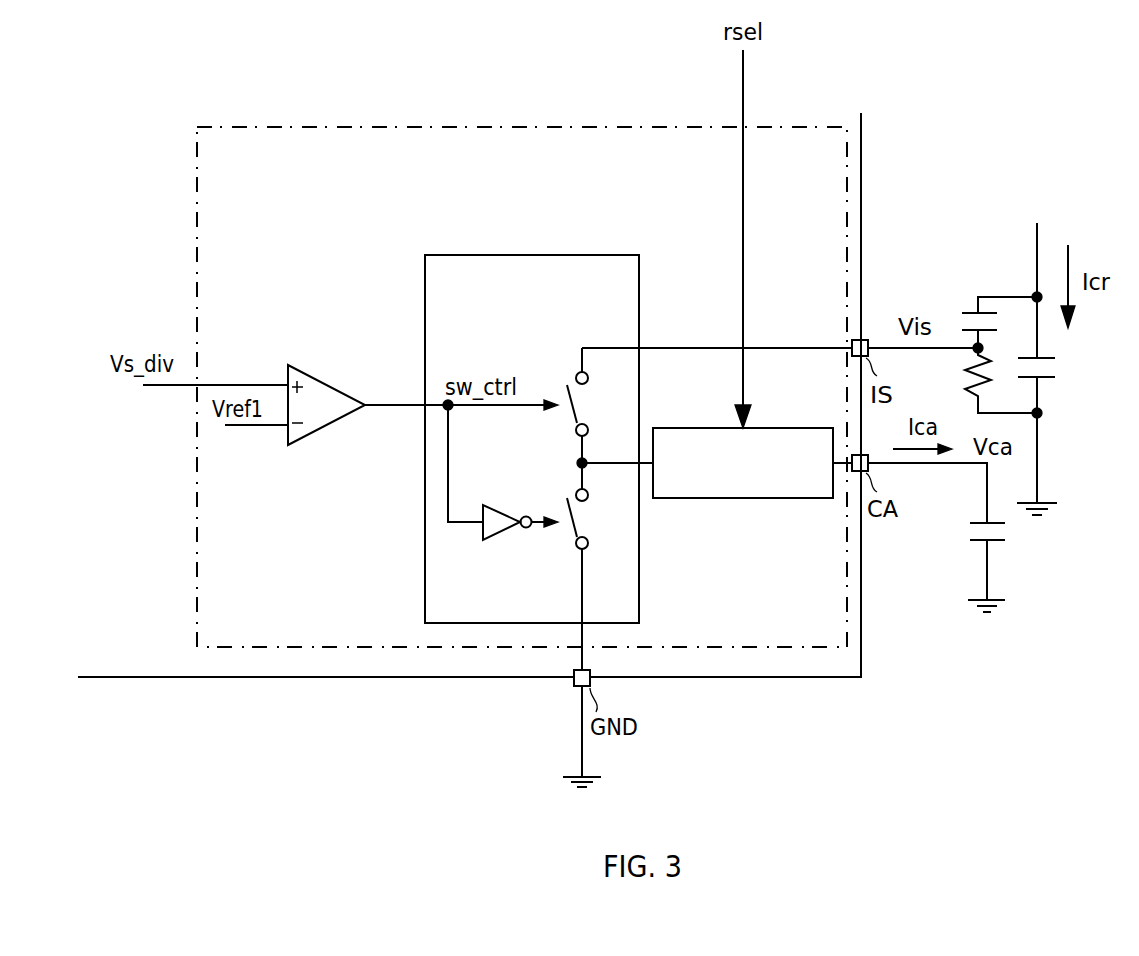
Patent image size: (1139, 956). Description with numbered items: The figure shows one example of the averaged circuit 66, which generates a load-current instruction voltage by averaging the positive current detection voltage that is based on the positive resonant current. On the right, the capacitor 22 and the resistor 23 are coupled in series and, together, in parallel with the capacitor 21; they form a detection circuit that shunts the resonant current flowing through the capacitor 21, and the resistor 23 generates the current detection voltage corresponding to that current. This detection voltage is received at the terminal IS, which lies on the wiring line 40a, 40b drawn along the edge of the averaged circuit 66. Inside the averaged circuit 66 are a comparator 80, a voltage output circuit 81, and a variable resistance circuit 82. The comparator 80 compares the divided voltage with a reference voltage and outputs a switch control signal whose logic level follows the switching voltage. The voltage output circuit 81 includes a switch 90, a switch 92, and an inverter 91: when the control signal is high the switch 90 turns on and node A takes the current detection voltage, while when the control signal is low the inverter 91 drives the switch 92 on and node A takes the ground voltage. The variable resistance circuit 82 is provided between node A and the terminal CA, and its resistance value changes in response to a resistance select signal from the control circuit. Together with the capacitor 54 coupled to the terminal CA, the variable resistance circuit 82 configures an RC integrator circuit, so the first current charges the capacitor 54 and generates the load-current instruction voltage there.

The averaged circuit 66 is at (612, 127).
The comparator 80 is at (322, 382).
The voltage output circuit 81 is at (603, 255).
The variable resistance circuit 82 is at (811, 428).
The switch 90 is at (577, 372).
The inverter 91 is at (486, 503).
The switch 92 is at (578, 550).
The wiring line 40a is at (523, 379).
The wiring line 40b is at (862, 121).
The capacitor 22 is at (963, 312).
The capacitor 21 is at (1056, 359).
The resistor 23 is at (969, 392).
The capacitor 54 is at (1000, 542).